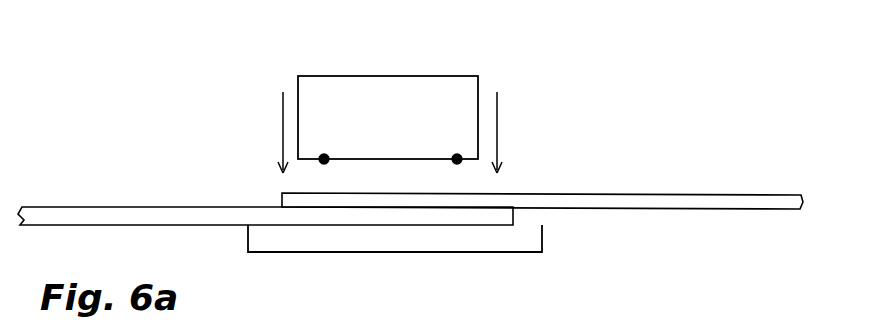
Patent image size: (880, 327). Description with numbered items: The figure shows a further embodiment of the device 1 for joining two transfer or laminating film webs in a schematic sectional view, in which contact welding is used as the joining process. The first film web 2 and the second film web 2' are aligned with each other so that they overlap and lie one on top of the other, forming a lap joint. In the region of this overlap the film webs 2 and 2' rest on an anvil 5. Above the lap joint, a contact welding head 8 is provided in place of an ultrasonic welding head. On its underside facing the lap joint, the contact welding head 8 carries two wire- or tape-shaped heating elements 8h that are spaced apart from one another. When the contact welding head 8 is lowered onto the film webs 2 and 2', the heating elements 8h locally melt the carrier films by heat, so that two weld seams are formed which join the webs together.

The assembly 1 is at (624, 84).
The first film web 2 is at (265, 187).
The second film web 2' is at (542, 182).
The anvil 5 is at (430, 238).
The contact welding head 8 is at (433, 82).
The heating elements 8h is at (324, 156).